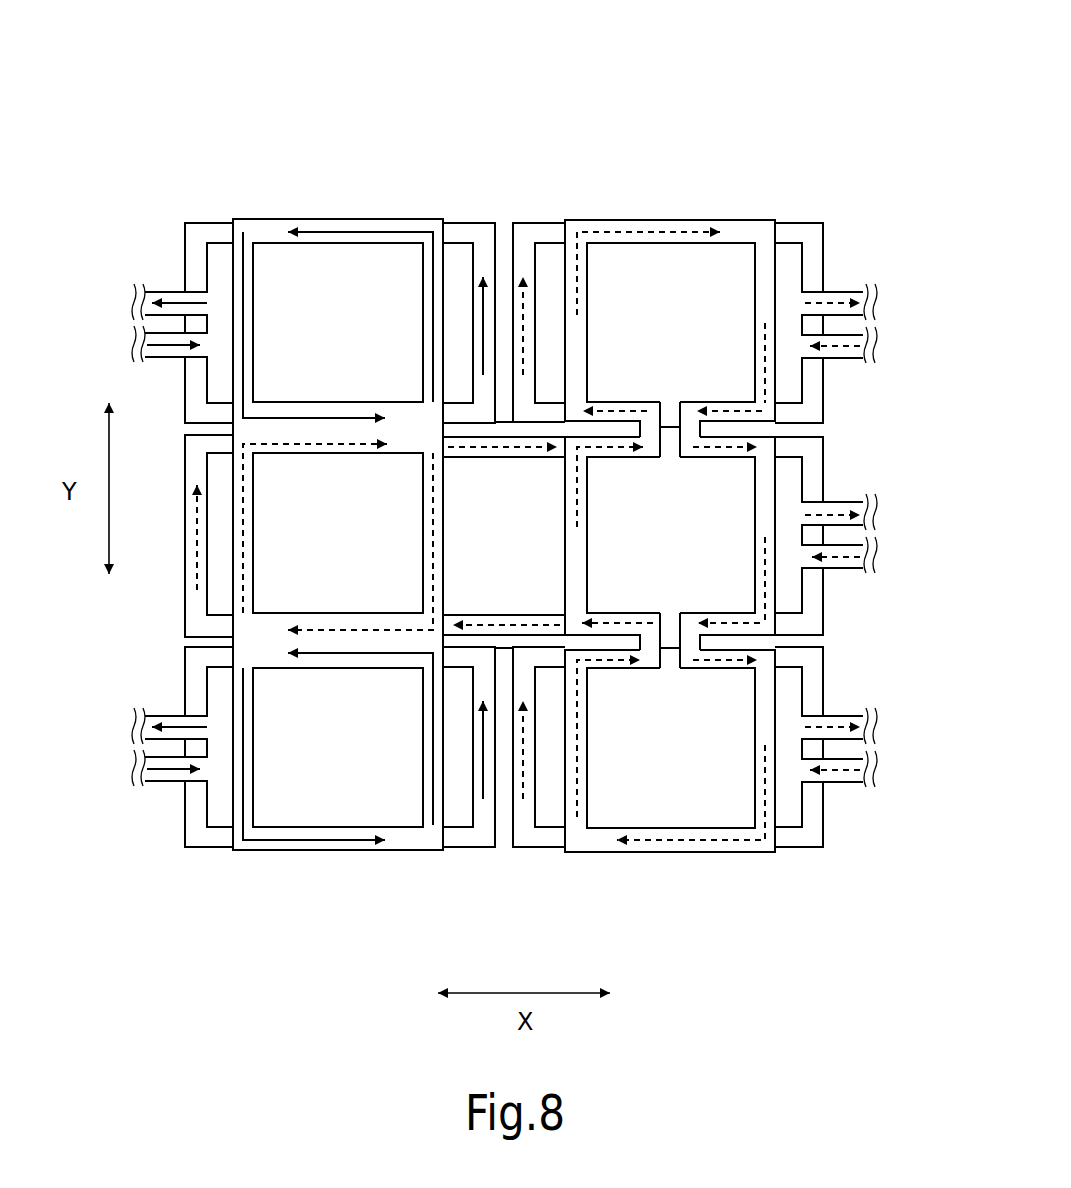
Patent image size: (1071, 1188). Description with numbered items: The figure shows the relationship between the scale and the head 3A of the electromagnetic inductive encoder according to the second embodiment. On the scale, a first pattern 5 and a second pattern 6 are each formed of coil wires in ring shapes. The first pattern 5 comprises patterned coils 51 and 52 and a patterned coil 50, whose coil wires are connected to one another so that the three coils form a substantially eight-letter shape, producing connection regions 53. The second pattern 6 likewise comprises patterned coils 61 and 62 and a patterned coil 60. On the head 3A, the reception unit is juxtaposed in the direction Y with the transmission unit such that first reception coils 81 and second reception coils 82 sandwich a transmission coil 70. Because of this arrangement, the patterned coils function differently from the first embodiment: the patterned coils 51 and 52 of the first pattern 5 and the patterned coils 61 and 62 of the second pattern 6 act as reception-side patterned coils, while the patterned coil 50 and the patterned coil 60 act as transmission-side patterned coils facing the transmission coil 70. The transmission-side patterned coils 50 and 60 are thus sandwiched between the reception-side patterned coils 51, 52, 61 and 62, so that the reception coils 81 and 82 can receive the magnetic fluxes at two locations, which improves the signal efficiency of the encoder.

The head 3A is at (768, 93).
The first pattern 5 is at (395, 210).
The second pattern 6 is at (733, 210).
The reception-side patterned coil 51 is at (330, 220).
The transmission-side patterned coil 50 is at (255, 548).
The reception-side patterned coil 52 is at (323, 850).
The connection region 53 is at (323, 400).
The reception-side patterned coil 61 is at (658, 220).
The transmission-side patterned coil 60 is at (587, 553).
The reception-side patterned coil 62 is at (652, 852).
The first reception coil 81 is at (150, 282).
The second reception coil 82 is at (145, 698).
The transmission coil 70 is at (852, 497).